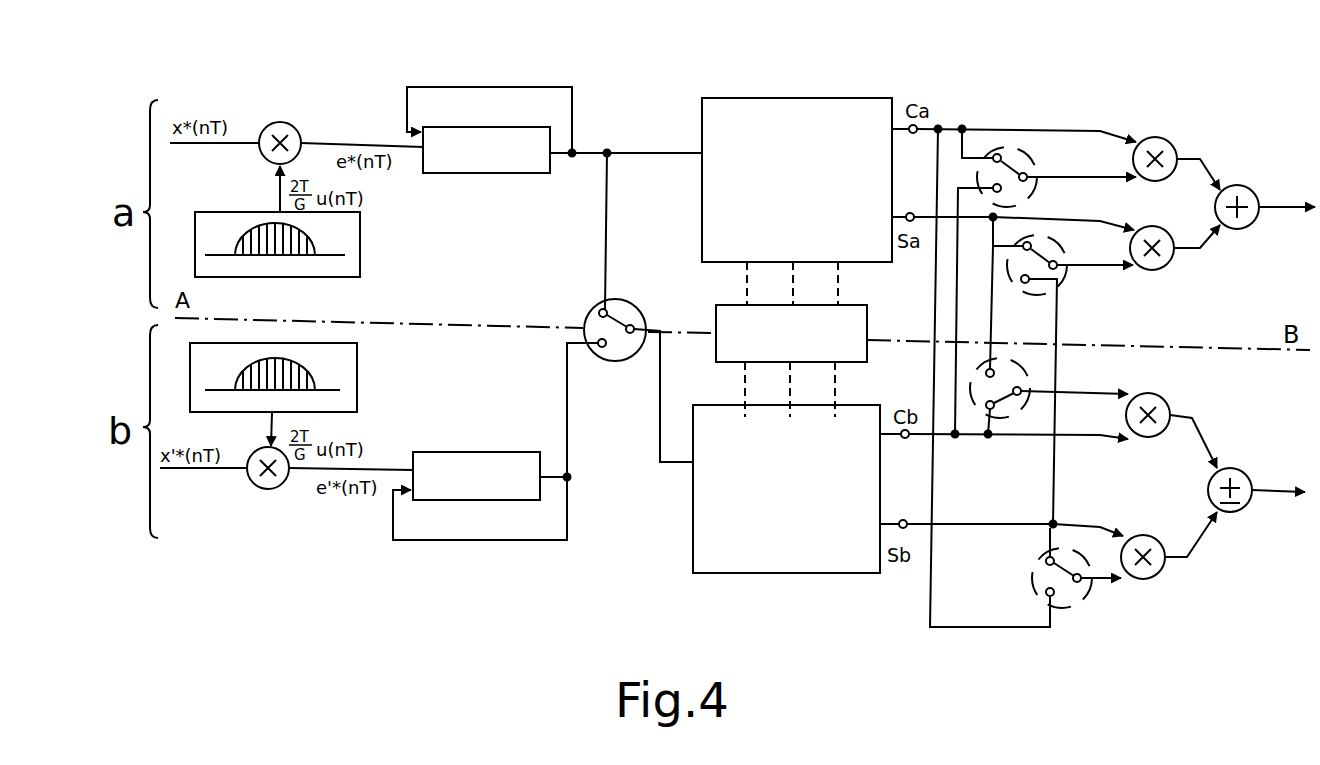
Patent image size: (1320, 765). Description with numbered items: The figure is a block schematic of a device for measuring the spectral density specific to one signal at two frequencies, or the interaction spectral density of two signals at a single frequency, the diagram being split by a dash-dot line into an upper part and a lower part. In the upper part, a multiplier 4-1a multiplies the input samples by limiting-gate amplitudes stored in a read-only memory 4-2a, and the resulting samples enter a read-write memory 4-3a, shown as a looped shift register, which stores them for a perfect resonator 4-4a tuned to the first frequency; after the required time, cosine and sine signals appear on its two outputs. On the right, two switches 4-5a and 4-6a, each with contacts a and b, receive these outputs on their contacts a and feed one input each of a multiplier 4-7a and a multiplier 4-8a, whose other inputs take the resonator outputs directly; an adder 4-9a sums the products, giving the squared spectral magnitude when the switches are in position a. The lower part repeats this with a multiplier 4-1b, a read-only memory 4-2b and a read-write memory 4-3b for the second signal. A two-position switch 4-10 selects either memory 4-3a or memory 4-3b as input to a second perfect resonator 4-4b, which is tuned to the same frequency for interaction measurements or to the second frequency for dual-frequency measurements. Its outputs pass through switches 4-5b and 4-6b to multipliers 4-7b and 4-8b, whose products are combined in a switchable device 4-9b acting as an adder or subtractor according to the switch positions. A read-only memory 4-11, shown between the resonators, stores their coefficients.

The multiplier 4-1a is at (298, 127).
The read-only memory 4-2a is at (360, 238).
The read-write memory 4-3a is at (450, 173).
The perfect resonator 4-4a is at (765, 98).
The switch 4-5a is at (1012, 147).
The switch 4-6a is at (1063, 283).
The multiplier 4-7a is at (1172, 142).
The multiplier 4-8a is at (1166, 266).
The adder 4-9a is at (1252, 190).
The multiplier 4-1b is at (284, 485).
The read-only memory 4-2b is at (357, 400).
The read-write memory 4-3b is at (445, 452).
The perfect resonator 4-4b is at (830, 573).
The switch 4-5b is at (1026, 365).
The switch 4-6b is at (1070, 605).
The multiplier 4-7b is at (1164, 399).
The multiplier 4-8b is at (1158, 574).
The switchable adder/subtractor device 4-9b is at (1243, 508).
The two-position switch 4-10 is at (605, 361).
The read-only memory 4-11 is at (716, 314).